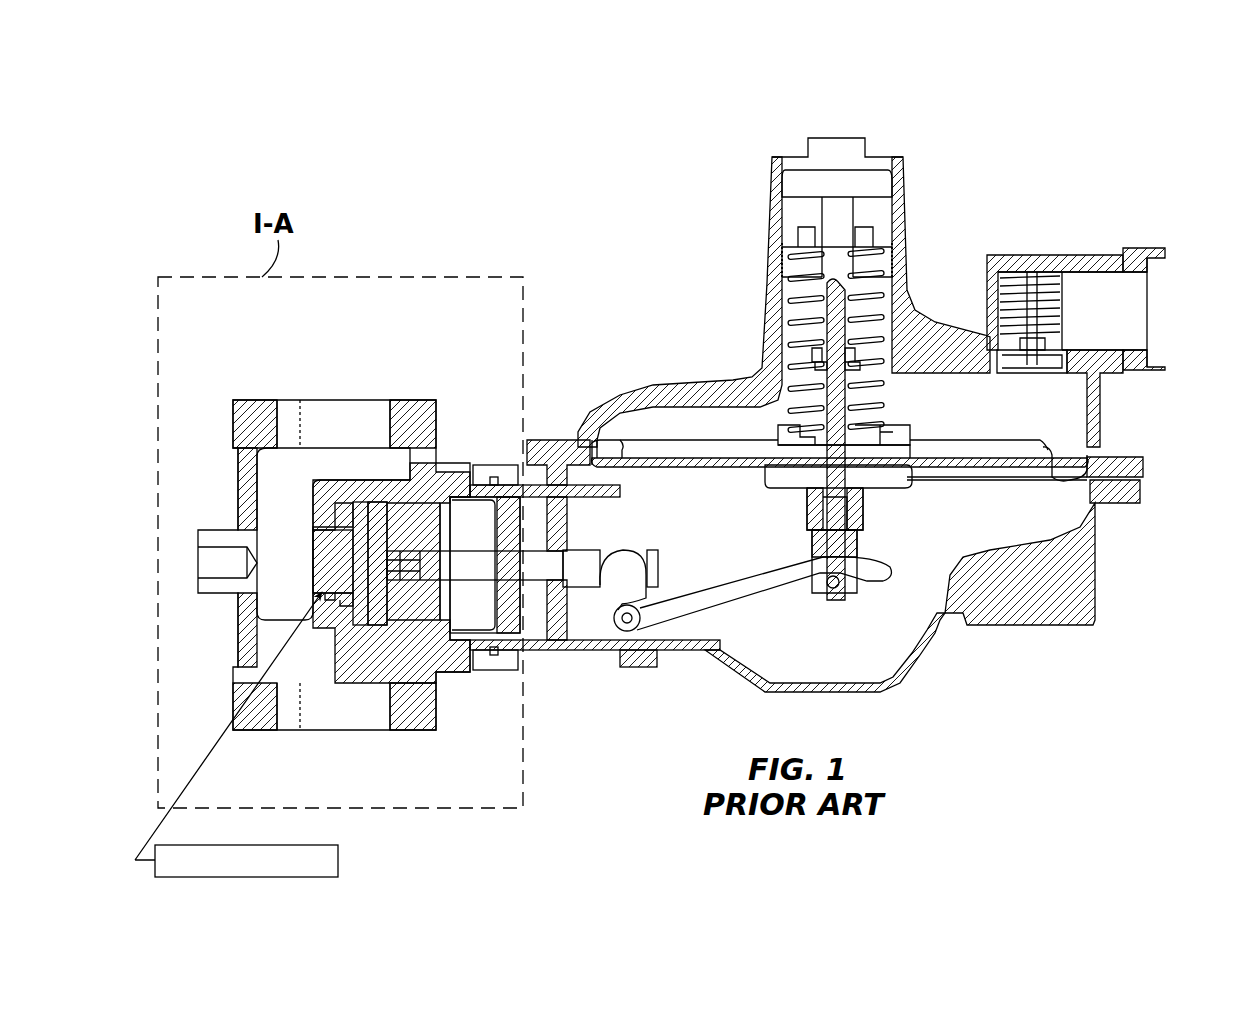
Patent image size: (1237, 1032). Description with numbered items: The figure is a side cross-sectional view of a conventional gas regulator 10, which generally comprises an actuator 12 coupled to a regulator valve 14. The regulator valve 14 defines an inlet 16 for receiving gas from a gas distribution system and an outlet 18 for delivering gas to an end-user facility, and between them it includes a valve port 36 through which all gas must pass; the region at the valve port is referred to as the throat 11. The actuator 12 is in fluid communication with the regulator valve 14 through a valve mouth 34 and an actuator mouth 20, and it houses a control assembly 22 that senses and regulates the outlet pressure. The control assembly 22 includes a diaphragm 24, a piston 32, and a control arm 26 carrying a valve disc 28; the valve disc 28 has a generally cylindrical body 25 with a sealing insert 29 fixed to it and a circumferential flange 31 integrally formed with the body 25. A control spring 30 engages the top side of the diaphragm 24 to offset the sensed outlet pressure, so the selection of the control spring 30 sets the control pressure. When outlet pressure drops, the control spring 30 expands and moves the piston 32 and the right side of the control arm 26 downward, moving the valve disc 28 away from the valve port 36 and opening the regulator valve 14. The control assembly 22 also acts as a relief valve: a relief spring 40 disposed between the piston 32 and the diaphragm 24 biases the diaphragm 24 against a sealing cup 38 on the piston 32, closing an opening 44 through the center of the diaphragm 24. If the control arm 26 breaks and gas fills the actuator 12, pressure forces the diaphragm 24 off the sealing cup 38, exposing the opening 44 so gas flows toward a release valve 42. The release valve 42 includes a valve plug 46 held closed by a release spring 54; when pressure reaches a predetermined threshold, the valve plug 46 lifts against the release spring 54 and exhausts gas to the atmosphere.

The gas regulator 10 is at (938, 128).
The throat 11 is at (236, 734).
The actuator 12 is at (910, 270).
The regulator valve 14 is at (432, 392).
The inlet 16 is at (290, 412).
The outlet 18 is at (287, 720).
The actuator mouth 20 is at (537, 652).
The control assembly 22 is at (890, 503).
The diaphragm 24 is at (1040, 450).
The body 25 is at (373, 625).
The control arm 26 is at (680, 618).
The valve disc 28 is at (371, 498).
The sealing insert 29 is at (350, 572).
The control spring 30 is at (800, 300).
The circumferential flange 31 is at (352, 527).
The piston 32 is at (830, 350).
The valve mouth 34 is at (457, 655).
The valve port 36 is at (323, 553).
The sealing cup 38 is at (772, 485).
The relief spring 40 is at (880, 390).
The release valve 42 is at (1068, 310).
The opening 44 is at (818, 400).
The valve plug 46 is at (1050, 372).
The release spring 54 is at (1075, 262).